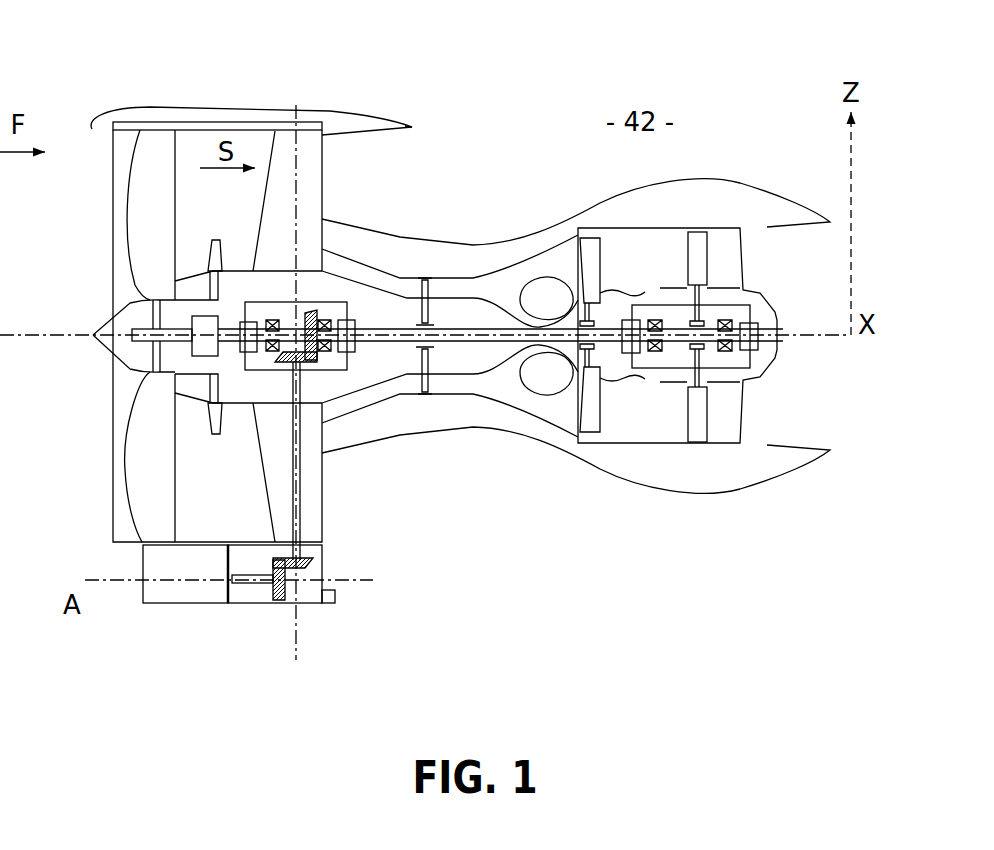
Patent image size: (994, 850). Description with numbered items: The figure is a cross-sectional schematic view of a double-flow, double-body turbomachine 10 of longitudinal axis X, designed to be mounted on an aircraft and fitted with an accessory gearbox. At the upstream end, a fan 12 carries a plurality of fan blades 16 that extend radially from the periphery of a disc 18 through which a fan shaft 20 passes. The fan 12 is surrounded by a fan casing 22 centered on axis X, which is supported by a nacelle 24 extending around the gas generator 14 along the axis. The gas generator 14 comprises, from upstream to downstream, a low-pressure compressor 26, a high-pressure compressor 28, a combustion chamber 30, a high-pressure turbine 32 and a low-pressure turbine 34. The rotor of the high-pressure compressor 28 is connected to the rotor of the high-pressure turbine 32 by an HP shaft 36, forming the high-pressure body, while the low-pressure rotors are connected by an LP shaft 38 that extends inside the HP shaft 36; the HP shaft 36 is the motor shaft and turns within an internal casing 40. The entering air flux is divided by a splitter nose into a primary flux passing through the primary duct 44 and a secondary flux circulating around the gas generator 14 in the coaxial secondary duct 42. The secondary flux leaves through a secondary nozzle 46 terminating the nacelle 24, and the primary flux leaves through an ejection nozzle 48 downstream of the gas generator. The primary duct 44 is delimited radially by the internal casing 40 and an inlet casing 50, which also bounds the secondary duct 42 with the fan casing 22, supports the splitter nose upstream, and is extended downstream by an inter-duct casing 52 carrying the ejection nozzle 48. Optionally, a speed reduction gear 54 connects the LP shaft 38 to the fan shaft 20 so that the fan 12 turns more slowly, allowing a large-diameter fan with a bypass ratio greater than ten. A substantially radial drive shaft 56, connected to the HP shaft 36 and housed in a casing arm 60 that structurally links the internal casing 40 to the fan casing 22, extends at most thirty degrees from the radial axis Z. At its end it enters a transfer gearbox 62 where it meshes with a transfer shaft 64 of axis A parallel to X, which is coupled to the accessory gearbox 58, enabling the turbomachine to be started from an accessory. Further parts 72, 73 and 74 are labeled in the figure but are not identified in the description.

The turbomachine 10 is at (780, 105).
The fan 12 is at (148, 212).
The gas generator 14 is at (512, 396).
The fan blades 16 is at (160, 162).
The disc 18 is at (147, 357).
The fan shaft 20 is at (145, 328).
The fan casing 22 is at (232, 135).
The nacelle 24 is at (362, 119).
The low-pressure compressor 26 is at (214, 242).
The high-pressure compressor 28 is at (427, 277).
The combustion chamber 30 is at (538, 287).
The high-pressure turbine 32 is at (593, 240).
The low-pressure turbine 34 is at (698, 237).
The HP shaft 36 is at (363, 327).
The LP shaft 38 is at (228, 420).
The internal casing 40 is at (457, 377).
The secondary duct 42 is at (200, 447).
The primary duct 44 is at (403, 392).
The secondary nozzle 46 is at (412, 127).
The ejection nozzle 48 is at (800, 462).
The inlet casing 50 is at (256, 405).
The inter-duct casing 52 is at (603, 457).
The speed reduction gear 54 is at (190, 325).
The drive shaft 56 is at (300, 445).
The accessory gearbox 58 is at (180, 612).
The casing arm 60 is at (322, 508).
The transfer gearbox 62 is at (312, 612).
The transfer shaft 64 is at (247, 583).
The bevel gear 72 is at (307, 313).
The bevel pinion 73 is at (297, 365).
The transfer gearbox 74 is at (350, 366).